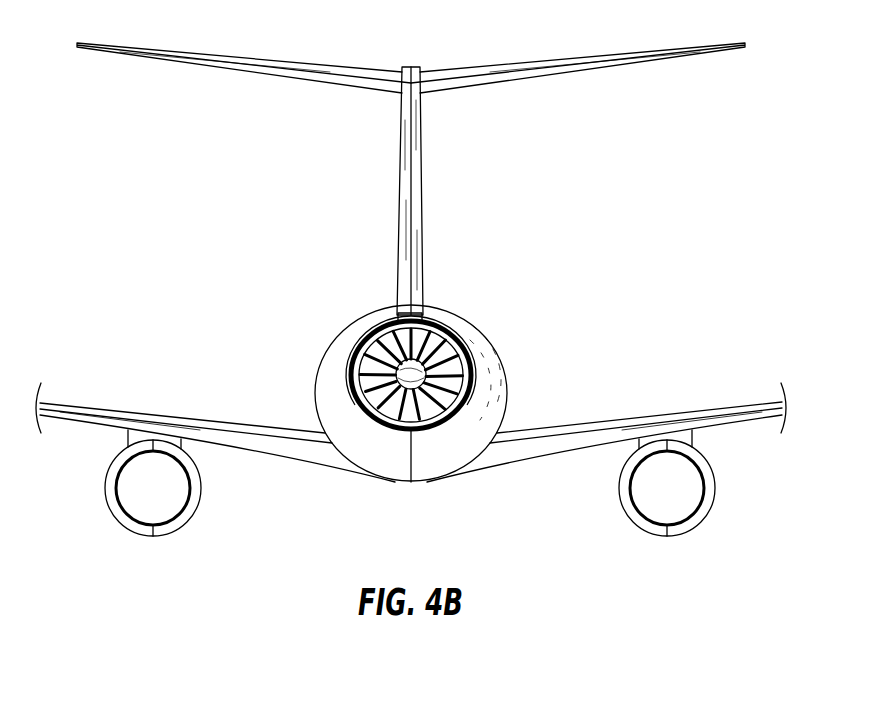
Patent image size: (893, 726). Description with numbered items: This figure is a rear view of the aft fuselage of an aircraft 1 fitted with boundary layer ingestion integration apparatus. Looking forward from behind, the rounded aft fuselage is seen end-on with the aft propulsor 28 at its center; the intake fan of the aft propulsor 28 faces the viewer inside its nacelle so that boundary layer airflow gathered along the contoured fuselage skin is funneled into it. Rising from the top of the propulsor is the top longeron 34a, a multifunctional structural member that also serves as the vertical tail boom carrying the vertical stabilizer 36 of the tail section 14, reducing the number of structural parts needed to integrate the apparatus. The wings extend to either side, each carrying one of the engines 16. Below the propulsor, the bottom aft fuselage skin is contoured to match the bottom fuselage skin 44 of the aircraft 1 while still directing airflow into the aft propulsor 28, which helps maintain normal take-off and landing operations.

The aircraft 1 is at (574, 337).
The tail section 14 is at (225, 180).
The engines 16 is at (139, 501).
The aft propulsor 28 is at (355, 360).
The top longeron 34a is at (418, 312).
The vertical stabilizer 36 is at (398, 240).
The bottom fuselage skin 44 is at (424, 484).